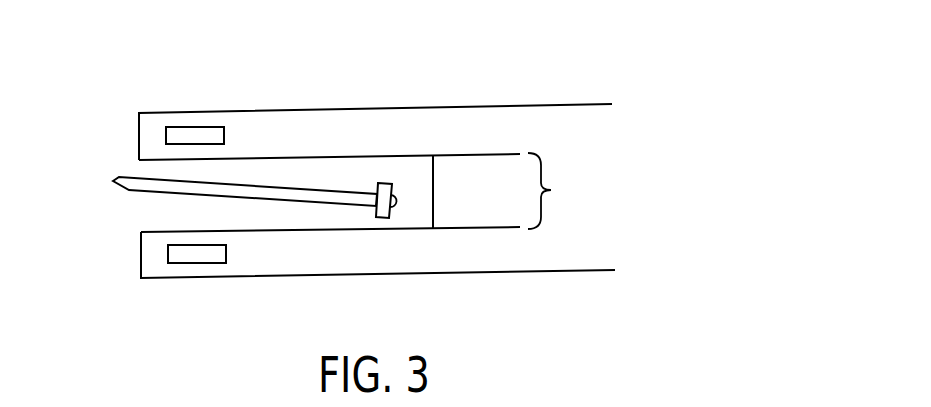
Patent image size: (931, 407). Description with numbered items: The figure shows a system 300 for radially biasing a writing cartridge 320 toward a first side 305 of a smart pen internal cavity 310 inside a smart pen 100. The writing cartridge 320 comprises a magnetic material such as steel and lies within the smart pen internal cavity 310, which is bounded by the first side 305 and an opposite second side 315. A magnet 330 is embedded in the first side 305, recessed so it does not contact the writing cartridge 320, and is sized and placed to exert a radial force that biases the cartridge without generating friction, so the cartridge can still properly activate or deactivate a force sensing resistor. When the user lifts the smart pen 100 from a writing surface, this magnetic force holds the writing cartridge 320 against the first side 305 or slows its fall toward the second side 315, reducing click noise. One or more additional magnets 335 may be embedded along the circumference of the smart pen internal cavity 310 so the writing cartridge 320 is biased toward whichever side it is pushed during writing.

The system 300 is at (356, 37).
The smart pen 100 is at (456, 96).
The first side 305 is at (309, 126).
The smart pen internal cavity 310 is at (517, 191).
The second side 315 is at (364, 258).
The writing cartridge 320 is at (123, 187).
The magnet 330 is at (196, 124).
The additional magnets 335 is at (199, 272).